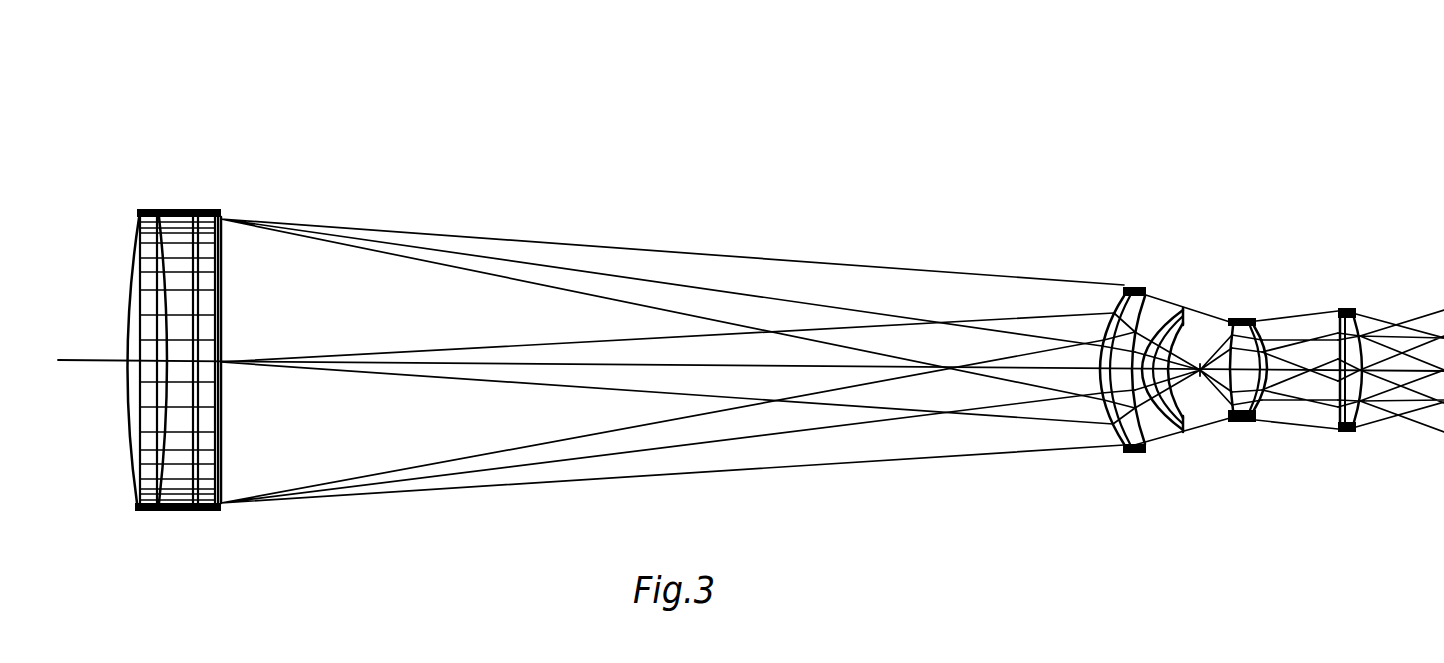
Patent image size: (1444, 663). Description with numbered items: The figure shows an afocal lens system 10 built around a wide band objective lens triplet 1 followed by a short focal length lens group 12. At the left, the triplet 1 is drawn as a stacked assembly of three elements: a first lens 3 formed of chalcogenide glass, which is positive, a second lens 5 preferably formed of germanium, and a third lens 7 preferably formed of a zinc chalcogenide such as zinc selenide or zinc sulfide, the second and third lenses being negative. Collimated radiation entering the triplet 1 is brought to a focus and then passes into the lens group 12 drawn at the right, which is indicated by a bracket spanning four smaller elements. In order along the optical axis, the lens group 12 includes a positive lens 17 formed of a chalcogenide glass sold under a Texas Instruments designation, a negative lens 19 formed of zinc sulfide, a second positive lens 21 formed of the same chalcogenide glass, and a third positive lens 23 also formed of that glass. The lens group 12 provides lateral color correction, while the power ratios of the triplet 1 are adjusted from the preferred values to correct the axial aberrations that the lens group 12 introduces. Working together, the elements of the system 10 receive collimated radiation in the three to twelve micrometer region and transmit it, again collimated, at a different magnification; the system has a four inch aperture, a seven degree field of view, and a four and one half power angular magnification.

The wide band objective lens triplet 1 is at (177, 195).
The lens 3 is at (133, 470).
The lens 5 is at (178, 511).
The lens 7 is at (220, 473).
The afocal lens system 10 is at (885, 65).
The short focal length lens group 12 is at (1368, 265).
The positive lens 17 is at (1133, 452).
The negative lens 19 is at (1176, 428).
The second positive lens 21 is at (1243, 424).
The third positive lens 23 is at (1344, 433).